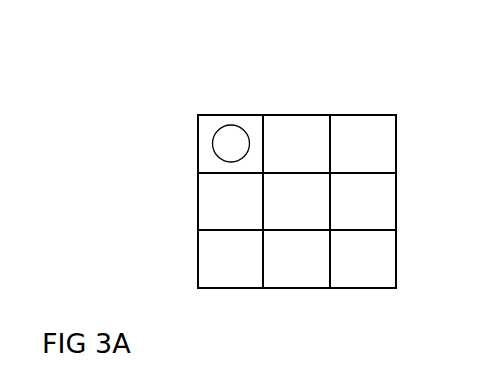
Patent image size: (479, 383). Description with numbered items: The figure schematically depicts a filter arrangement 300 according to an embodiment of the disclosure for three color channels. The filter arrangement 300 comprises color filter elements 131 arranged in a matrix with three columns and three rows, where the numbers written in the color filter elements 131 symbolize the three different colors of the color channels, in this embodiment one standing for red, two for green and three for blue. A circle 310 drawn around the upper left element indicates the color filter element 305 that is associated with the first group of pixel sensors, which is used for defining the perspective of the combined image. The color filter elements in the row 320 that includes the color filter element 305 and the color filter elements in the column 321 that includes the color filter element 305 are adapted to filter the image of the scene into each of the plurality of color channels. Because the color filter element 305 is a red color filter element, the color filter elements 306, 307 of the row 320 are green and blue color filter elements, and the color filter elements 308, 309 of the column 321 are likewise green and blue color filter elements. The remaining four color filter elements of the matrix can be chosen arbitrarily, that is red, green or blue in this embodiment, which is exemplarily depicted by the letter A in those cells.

The filter arrangement 300 is at (118, 91).
The color filter element 305 is at (197, 117).
The color filter element 306 is at (300, 113).
The color filter element 307 is at (372, 113).
The color filter element 308 is at (197, 193).
The color filter element 309 is at (197, 250).
The circle 310 is at (241, 127).
The row 320 is at (413, 137).
The column 321 is at (228, 298).
The color filter elements 131 is at (397, 273).